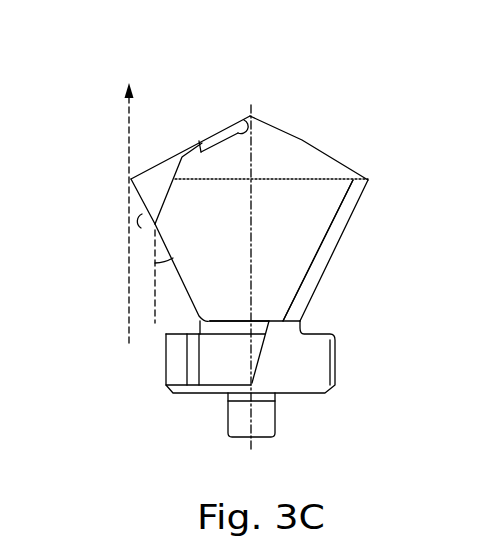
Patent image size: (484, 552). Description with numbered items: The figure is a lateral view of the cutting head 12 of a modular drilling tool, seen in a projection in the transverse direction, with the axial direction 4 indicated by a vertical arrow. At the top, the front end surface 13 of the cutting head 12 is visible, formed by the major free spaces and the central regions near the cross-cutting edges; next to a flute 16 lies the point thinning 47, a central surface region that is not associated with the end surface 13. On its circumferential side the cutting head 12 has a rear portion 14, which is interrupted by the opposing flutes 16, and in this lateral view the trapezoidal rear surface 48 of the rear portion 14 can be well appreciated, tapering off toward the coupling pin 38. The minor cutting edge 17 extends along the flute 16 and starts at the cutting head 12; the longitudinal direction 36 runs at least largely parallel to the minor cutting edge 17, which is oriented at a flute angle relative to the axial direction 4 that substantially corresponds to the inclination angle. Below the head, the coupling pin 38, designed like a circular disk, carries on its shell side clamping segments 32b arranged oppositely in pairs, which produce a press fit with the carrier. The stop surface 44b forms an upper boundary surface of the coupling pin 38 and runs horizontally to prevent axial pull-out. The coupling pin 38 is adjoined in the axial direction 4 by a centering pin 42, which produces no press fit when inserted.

The axial direction 4 is at (128, 116).
The cutting head 12 is at (318, 115).
The front end surface 13 is at (300, 168).
The rear portion 14 is at (381, 250).
The trapezoidal rear surface 48 is at (305, 241).
The flute 16 is at (213, 133).
The minor cutting edge 17 is at (137, 193).
The longitudinal direction 36 is at (186, 287).
The coupling pin 38 is at (212, 374).
The clamping segment 32b is at (230, 363).
The centering pin 42 is at (269, 421).
The stop surface 44b is at (238, 335).
The point thinning 47 is at (233, 130).